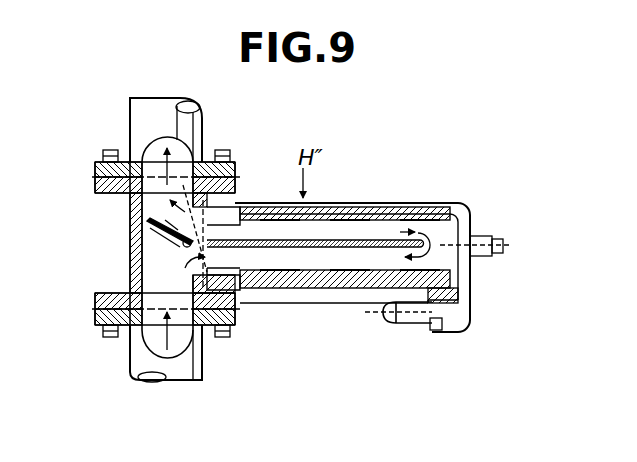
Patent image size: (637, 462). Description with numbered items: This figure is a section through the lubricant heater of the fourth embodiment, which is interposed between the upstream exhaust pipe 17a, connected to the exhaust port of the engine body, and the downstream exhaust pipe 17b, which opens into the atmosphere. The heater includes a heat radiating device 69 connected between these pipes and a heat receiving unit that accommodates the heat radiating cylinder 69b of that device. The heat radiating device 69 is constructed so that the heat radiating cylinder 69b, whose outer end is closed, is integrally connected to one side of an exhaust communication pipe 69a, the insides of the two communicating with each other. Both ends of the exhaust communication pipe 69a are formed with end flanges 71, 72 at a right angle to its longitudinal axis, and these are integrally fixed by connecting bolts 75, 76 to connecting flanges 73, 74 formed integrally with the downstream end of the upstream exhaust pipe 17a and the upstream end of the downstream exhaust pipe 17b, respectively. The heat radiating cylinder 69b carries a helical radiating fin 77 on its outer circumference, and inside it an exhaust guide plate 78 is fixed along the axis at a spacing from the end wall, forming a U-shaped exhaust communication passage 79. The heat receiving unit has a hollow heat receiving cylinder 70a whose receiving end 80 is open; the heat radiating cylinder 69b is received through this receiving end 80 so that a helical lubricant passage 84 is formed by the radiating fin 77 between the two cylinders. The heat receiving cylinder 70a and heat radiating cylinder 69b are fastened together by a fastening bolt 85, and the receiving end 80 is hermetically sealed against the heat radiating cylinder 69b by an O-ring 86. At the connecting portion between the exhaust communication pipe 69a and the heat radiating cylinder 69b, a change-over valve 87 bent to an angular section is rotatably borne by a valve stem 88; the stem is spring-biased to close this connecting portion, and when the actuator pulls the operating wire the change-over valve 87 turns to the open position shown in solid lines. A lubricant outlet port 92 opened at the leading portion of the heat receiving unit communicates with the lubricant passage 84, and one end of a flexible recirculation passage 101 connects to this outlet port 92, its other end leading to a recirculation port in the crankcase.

The upstream exhaust pipe 17a is at (132, 372).
The downstream exhaust pipe 17b is at (132, 121).
The heat radiating device 69 is at (241, 203).
The exhaust communication pipe 69a is at (130, 258).
The heat radiating cylinder 69b is at (388, 213).
The heat receiving cylinder 70a is at (335, 207).
The end flange 71 is at (97, 297).
The end flange 72 is at (103, 193).
The connecting flange 73 is at (105, 324).
The connecting flange 74 is at (95, 165).
The connecting bolt 75 is at (225, 337).
The connecting bolt 76 is at (222, 152).
The helical radiating fin 77 is at (400, 206).
The exhaust guide plate 78 is at (352, 248).
The U-shaped exhaust communication passage 79 is at (296, 272).
The receiving end 80 is at (251, 288).
The helical lubricant passage 84 is at (328, 282).
The fastening bolt 85 is at (503, 244).
The O-ring 86 is at (272, 207).
The change-over valve 87 is at (166, 219).
The valve stem 88 is at (178, 245).
The lubricant outlet port 92 is at (434, 330).
The flexible recirculation passage 101 is at (370, 314).